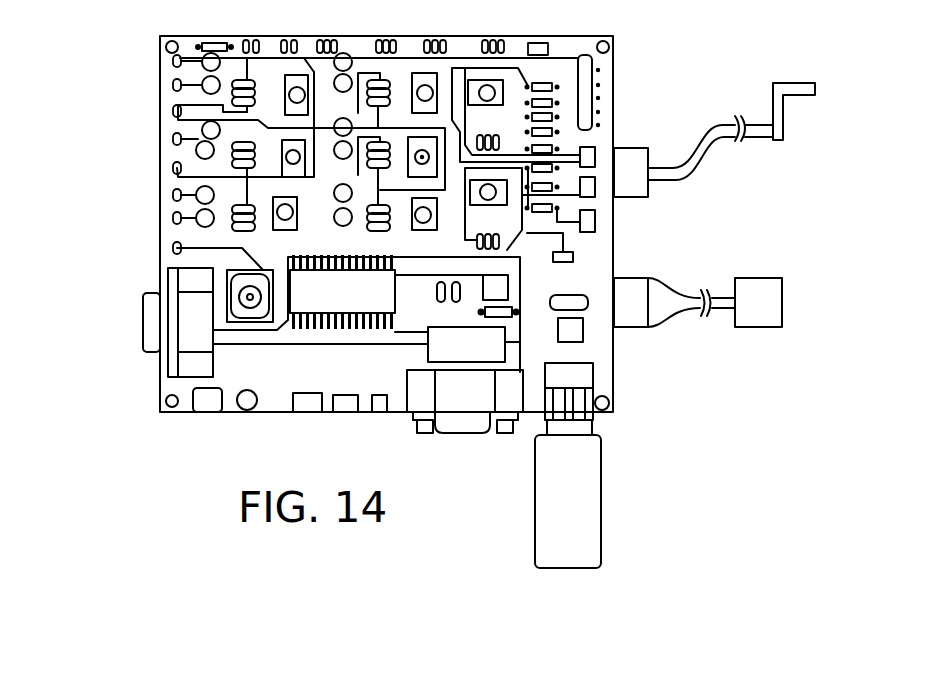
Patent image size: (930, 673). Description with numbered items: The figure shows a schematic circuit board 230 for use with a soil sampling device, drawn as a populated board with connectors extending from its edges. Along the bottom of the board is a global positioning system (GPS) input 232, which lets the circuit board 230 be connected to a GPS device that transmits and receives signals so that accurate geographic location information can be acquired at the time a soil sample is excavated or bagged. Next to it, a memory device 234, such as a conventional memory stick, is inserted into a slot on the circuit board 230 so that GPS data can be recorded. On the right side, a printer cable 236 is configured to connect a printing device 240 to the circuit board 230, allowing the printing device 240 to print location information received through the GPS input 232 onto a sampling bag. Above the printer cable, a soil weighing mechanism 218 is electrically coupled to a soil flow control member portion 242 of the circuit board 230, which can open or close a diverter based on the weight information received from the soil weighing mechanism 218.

The circuit board 230 is at (112, 181).
The global positioning system (GPS) input 232 is at (460, 423).
The memory device 234 is at (582, 491).
The printer cable 236 is at (635, 317).
The printing device 240 is at (755, 290).
The soil flow control member portion 242 is at (632, 158).
The soil weighing mechanism 218 is at (773, 89).